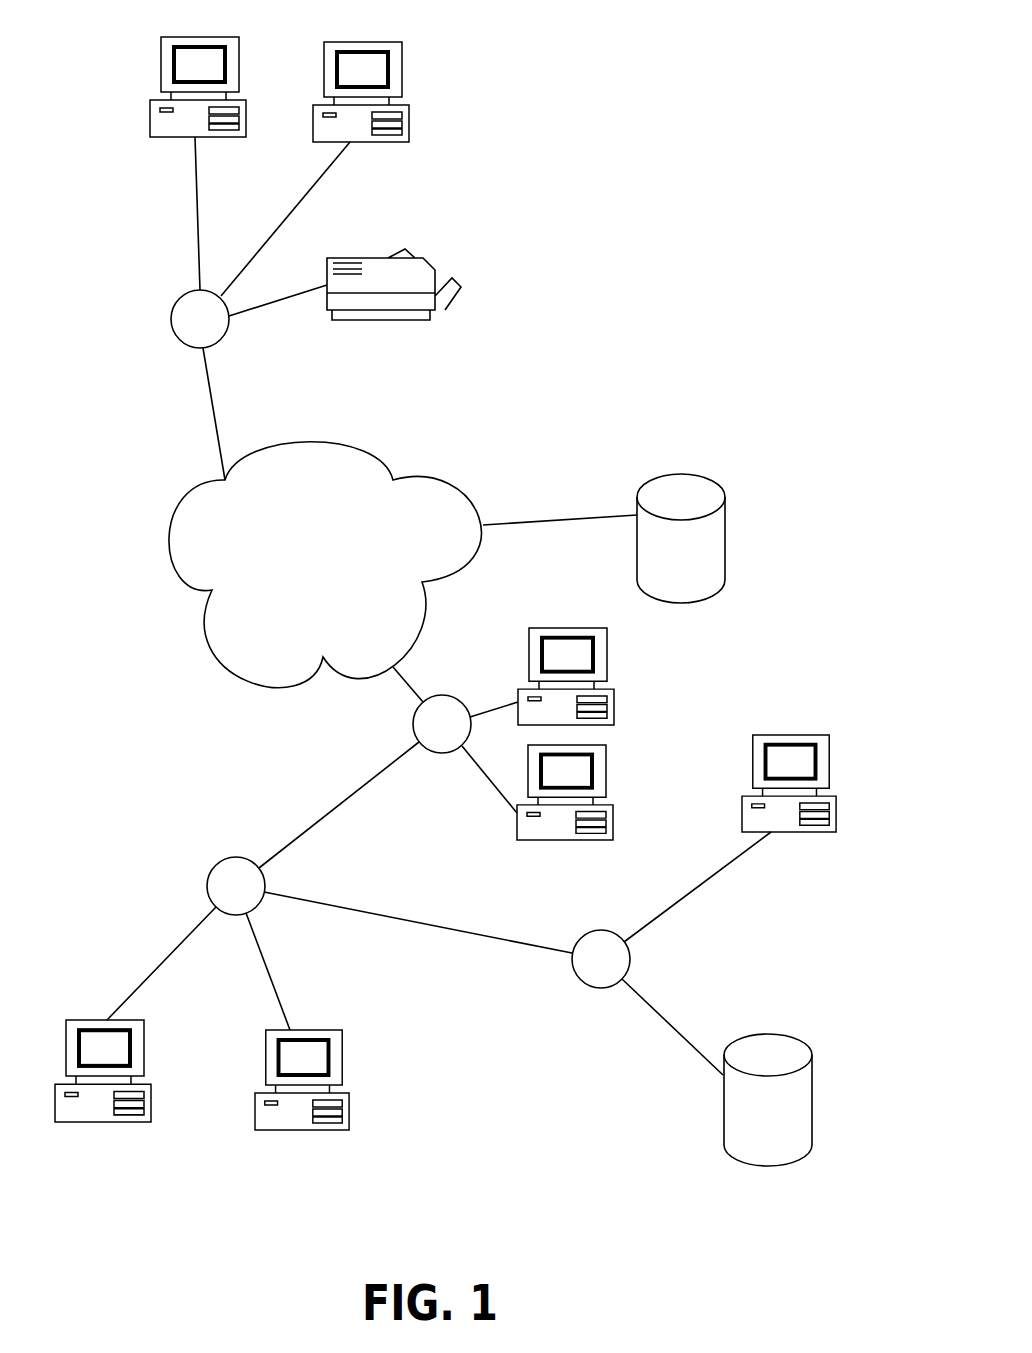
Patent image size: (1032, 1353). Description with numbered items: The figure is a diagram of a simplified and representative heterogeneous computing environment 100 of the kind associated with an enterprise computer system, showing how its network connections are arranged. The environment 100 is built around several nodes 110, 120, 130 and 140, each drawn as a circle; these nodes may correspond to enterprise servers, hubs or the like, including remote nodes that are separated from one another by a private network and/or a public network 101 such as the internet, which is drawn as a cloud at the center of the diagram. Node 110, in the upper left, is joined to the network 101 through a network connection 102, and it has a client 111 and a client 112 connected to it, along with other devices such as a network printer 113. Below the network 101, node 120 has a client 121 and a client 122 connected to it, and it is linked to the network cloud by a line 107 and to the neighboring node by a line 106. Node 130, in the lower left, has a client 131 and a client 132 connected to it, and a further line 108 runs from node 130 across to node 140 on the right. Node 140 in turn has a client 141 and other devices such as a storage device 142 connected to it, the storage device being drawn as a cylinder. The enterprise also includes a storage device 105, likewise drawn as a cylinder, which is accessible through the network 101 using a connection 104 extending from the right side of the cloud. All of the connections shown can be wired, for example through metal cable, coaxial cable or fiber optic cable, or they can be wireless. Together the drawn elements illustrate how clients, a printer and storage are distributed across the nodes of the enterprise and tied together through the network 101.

The heterogonous computing environment 100 is at (742, 250).
The public network 101 is at (373, 460).
The network connection 102 is at (219, 420).
The connection 104 is at (550, 518).
The storage device 105 is at (690, 475).
The connection line 106 is at (281, 851).
The connection line 107 is at (407, 688).
The connection line 108 is at (363, 911).
The node 110 is at (172, 301).
The client 111 is at (242, 90).
The client 112 is at (403, 100).
The network printer 113 is at (433, 263).
The node 120 is at (447, 757).
The client 121 is at (610, 680).
The client 122 is at (606, 800).
The node 130 is at (210, 857).
The client 131 is at (150, 1073).
The client 132 is at (348, 1080).
The node 140 is at (601, 989).
The client 141 is at (835, 789).
The storage device 142 is at (779, 1027).